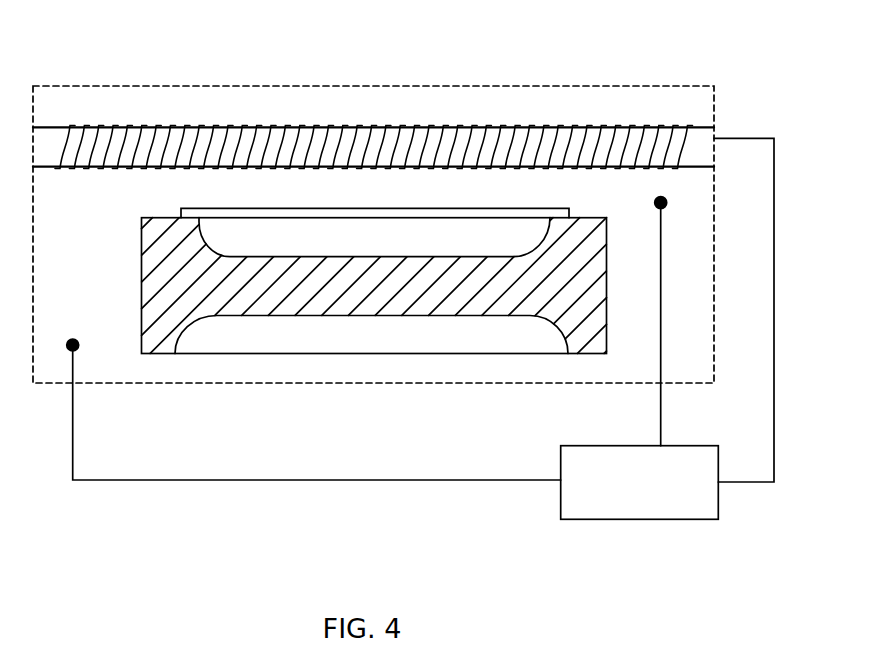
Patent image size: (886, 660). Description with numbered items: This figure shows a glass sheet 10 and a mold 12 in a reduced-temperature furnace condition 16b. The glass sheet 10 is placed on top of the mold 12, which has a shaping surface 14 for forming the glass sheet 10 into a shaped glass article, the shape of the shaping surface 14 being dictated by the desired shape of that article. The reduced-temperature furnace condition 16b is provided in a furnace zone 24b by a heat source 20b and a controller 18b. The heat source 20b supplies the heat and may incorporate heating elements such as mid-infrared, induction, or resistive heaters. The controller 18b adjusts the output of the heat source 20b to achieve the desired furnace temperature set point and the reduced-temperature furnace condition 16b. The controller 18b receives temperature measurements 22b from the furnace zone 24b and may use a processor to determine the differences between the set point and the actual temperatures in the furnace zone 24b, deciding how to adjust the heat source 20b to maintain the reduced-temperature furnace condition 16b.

The glass sheet 10 is at (543, 208).
The mold 12 is at (162, 355).
The shaping surface 14 is at (372, 255).
The reduced-temperature furnace condition 16b is at (72, 227).
The controller 18b is at (639, 498).
The heat source 20b is at (379, 125).
The temperature measurements 22b is at (662, 343).
The furnace zone 24b is at (500, 85).